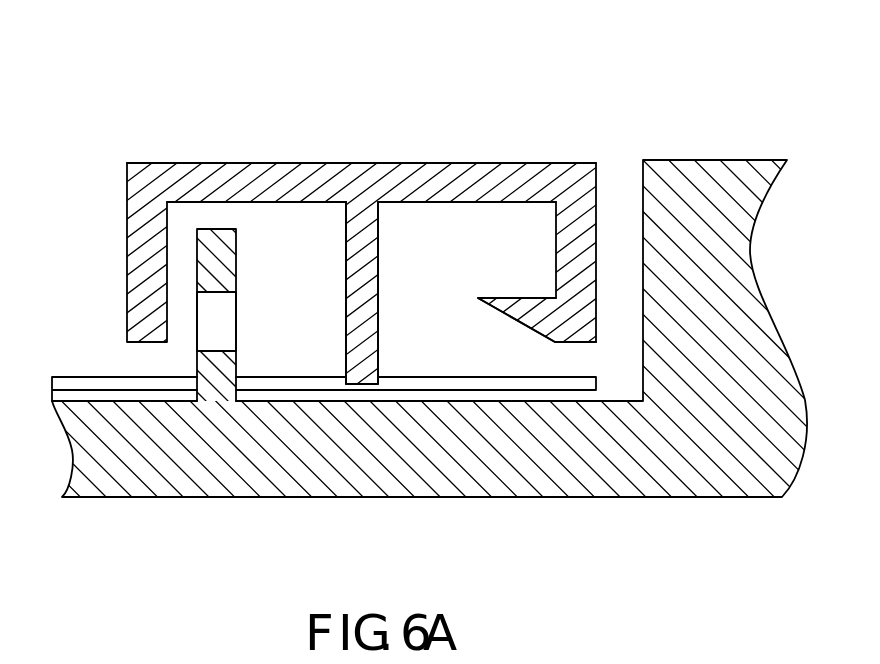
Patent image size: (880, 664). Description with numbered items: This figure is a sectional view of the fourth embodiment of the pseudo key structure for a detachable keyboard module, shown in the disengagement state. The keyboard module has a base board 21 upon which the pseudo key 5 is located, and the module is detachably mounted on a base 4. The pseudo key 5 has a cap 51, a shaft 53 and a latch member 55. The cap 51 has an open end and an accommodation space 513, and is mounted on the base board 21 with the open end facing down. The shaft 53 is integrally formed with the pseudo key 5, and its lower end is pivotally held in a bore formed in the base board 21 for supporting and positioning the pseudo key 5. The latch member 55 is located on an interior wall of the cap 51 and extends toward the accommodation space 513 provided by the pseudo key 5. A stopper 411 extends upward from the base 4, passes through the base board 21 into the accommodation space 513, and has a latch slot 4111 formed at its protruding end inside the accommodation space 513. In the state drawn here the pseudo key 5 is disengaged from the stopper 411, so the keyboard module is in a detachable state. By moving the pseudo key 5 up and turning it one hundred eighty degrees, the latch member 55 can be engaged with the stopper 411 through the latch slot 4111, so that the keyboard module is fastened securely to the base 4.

The pseudo key 5 is at (401, 120).
The cap 51 is at (493, 178).
The shaft 53 is at (352, 238).
The latch member 55 is at (533, 303).
The accommodation space 513 is at (390, 310).
The base 4 is at (252, 472).
The stopper 411 is at (222, 252).
The latch slot 4111 is at (222, 323).
The base board 21 is at (92, 385).